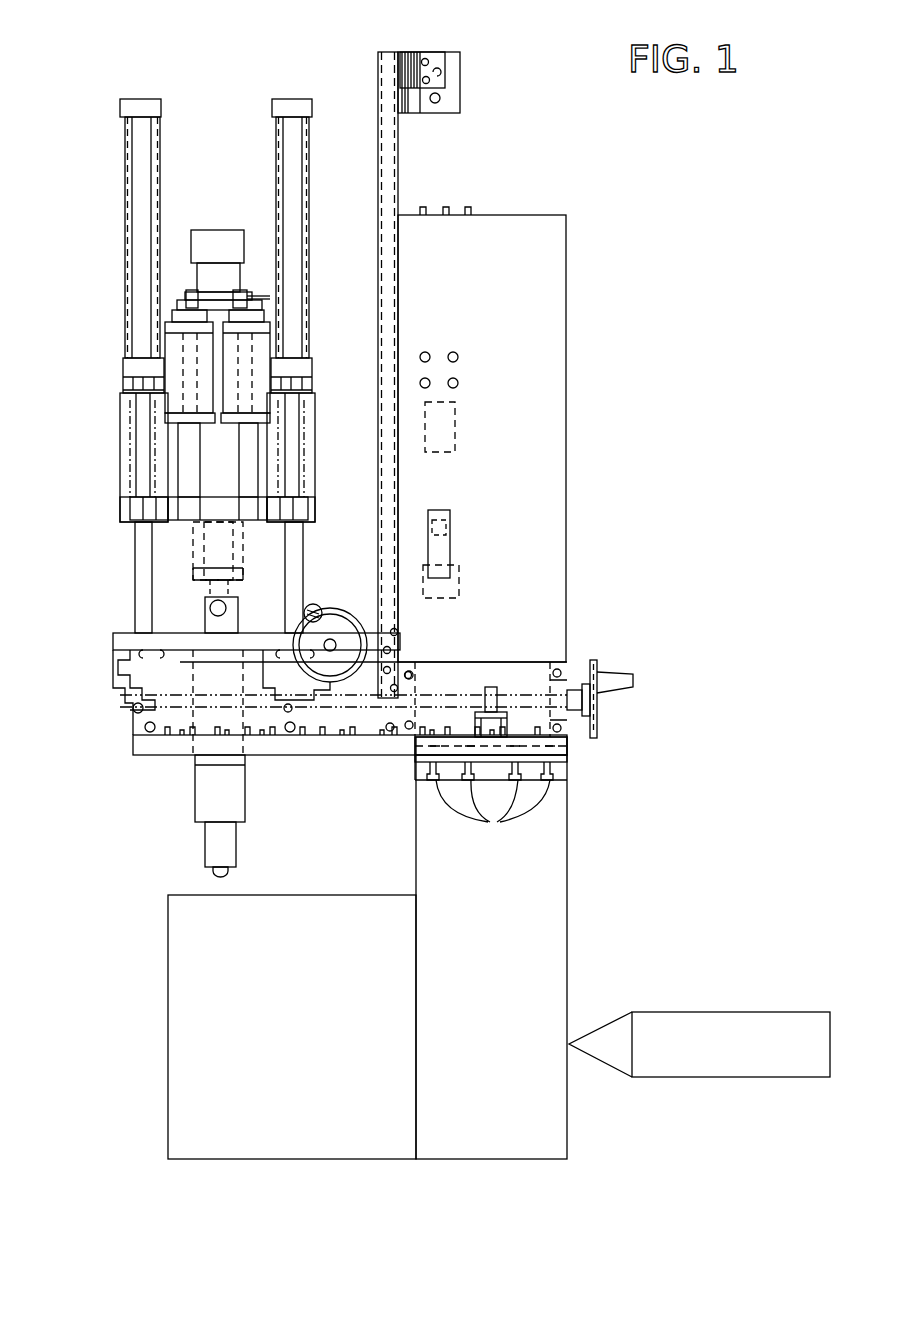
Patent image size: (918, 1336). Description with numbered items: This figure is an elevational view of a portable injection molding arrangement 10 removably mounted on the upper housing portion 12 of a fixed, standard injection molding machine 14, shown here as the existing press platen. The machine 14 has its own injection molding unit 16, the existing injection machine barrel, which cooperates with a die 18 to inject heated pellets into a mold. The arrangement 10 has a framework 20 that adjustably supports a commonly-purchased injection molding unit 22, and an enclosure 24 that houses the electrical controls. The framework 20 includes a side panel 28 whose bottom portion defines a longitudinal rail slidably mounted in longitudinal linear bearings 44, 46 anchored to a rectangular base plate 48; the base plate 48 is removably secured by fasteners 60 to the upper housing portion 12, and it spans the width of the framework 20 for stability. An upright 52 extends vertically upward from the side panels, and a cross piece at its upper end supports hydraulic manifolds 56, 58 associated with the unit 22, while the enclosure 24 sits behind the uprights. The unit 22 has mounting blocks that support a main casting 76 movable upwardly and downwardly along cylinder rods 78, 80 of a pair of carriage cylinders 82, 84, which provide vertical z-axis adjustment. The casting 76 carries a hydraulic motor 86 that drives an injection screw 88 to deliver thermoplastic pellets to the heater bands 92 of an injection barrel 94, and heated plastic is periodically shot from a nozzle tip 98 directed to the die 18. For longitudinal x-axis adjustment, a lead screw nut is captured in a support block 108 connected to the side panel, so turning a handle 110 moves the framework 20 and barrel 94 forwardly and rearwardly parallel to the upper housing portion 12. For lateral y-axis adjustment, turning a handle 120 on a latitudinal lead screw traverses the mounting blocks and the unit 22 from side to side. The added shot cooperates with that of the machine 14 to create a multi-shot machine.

The portable injection molding arrangement 10 is at (344, 92).
The upper housing portion 12 is at (540, 794).
The injection molding machine 14 is at (565, 905).
The injection molding unit 16 is at (761, 1008).
The die 18 is at (168, 1030).
The framework 20 is at (118, 712).
The injection molding unit 22 is at (99, 408).
The enclosure 24 is at (550, 307).
The side panel 28 is at (483, 668).
The longitudinal linear bearing 44 is at (560, 748).
The longitudinal linear bearing 46 is at (423, 745).
The base plate 48 is at (562, 767).
The upright 52 is at (387, 153).
The hydraulic manifold 56 is at (455, 81).
The hydraulic manifold 58 is at (426, 60).
The fasteners 60 is at (493, 818).
The main casting 76 is at (118, 503).
The cylinder rod 78 is at (300, 541).
The cylinder rod 80 is at (142, 572).
The carriage cylinder 82 is at (130, 150).
The carriage cylinder 84 is at (276, 151).
The hydraulic motor 86 is at (218, 238).
The injection screw 88 is at (205, 461).
The heater bands 92 is at (230, 802).
The injection barrel 94 is at (228, 843).
The nozzle tip 98 is at (226, 876).
The support block 108 is at (443, 700).
The handle 110 is at (634, 680).
The handle 120 is at (336, 612).